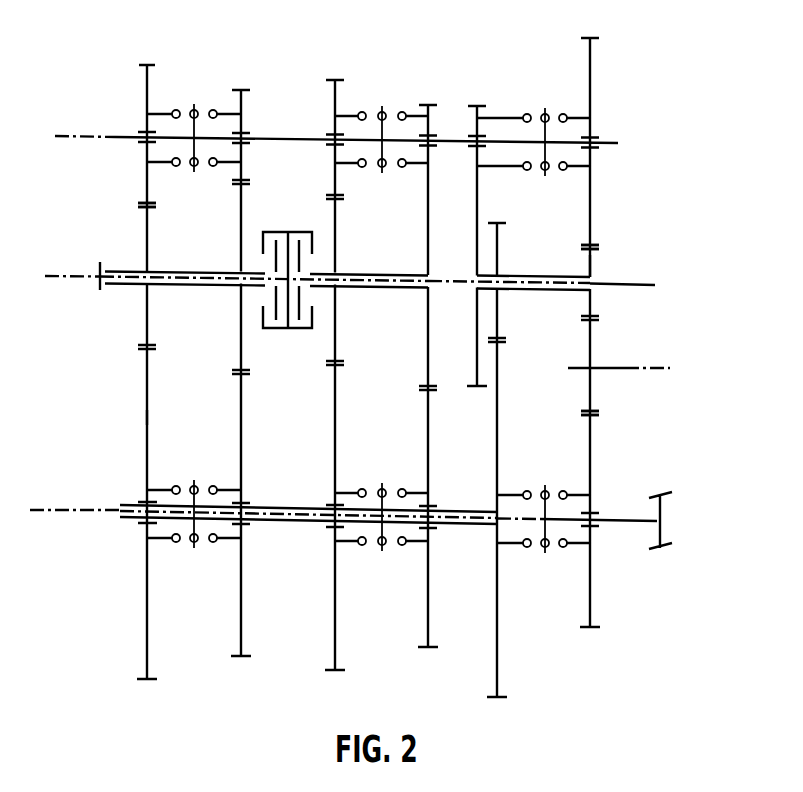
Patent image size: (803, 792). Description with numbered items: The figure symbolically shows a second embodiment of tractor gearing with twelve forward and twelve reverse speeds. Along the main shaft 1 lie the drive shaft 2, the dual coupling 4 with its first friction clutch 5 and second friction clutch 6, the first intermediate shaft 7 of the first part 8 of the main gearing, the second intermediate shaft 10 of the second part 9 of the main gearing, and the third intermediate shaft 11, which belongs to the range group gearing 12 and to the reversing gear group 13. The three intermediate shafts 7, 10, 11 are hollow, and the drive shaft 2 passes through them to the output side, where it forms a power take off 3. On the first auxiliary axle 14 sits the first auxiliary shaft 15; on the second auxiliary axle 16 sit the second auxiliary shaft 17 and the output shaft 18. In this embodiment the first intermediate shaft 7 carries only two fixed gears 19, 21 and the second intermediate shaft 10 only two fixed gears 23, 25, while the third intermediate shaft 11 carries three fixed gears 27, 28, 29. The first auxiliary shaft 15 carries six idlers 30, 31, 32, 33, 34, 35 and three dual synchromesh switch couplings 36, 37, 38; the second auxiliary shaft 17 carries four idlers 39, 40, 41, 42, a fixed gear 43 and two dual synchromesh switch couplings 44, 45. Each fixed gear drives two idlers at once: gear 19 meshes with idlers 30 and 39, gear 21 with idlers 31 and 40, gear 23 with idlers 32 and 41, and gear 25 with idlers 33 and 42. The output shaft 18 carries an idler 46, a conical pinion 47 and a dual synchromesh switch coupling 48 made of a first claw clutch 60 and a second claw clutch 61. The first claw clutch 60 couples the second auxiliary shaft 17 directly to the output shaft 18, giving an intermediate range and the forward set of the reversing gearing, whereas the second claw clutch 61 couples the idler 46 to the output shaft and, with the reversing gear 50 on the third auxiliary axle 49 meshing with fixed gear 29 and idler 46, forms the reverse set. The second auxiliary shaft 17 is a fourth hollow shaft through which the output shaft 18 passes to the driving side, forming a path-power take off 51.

The main shaft 1 is at (77, 272).
The drive shaft 2 is at (122, 268).
The power take off 3 is at (622, 285).
The dual coupling 4 is at (288, 218).
The first friction clutch 5 is at (270, 322).
The second friction clutch 6 is at (303, 322).
The first intermediate shaft 7 is at (189, 272).
The first part of the main gearing 8 is at (118, 203).
The second part of the main gearing 9 is at (126, 417).
The second intermediate shaft 10 is at (374, 272).
The third intermediate shaft 11 is at (540, 275).
The range group gearing 12 is at (614, 203).
The reversing gear group 13 is at (624, 413).
The first auxiliary axle 14 is at (64, 134).
The first auxiliary shaft 15 is at (278, 139).
The second auxiliary axle 16 is at (57, 510).
The second auxiliary shaft 17 is at (453, 510).
The output shaft 18 is at (614, 520).
The fixed gear 19 is at (146, 315).
The fixed gear 21 is at (240, 328).
The fixed gear 23 is at (336, 333).
The fixed gear 25 is at (425, 345).
The fixed gear 27 is at (470, 390).
The fixed gear 28 is at (491, 223).
The fixed gear 29 is at (592, 262).
The idler 30 is at (147, 87).
The idler 31 is at (242, 90).
The idler 32 is at (335, 80).
The idler 33 is at (426, 102).
The idler 34 is at (477, 104).
The idler 35 is at (591, 68).
The dual synchromesh switch coupling 36 is at (194, 92).
The dual synchromesh switch coupling 37 is at (382, 94).
The dual synchromesh switch coupling 38 is at (545, 94).
The idler 39 is at (146, 622).
The idler 40 is at (240, 605).
The idler 41 is at (332, 592).
The idler 42 is at (425, 592).
The fixed gear 43 is at (496, 642).
The dual synchromesh switch coupling 44 is at (194, 466).
The dual synchromesh switch coupling 45 is at (382, 469).
The idler 46 is at (590, 597).
The conical pinion 47 is at (664, 550).
The dual synchromesh switch coupling 48 is at (545, 468).
The third auxiliary axle 49 is at (658, 367).
The reversing gear 50 is at (592, 345).
The path-power take off 51 is at (108, 510).
The first claw clutch 60 is at (531, 548).
The second claw clutch 61 is at (549, 548).